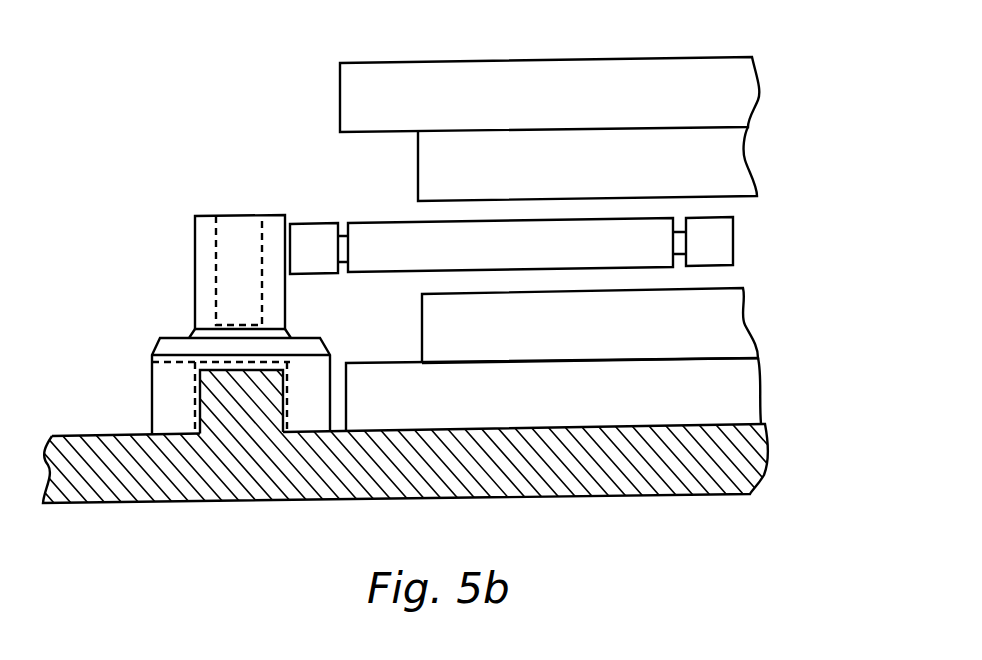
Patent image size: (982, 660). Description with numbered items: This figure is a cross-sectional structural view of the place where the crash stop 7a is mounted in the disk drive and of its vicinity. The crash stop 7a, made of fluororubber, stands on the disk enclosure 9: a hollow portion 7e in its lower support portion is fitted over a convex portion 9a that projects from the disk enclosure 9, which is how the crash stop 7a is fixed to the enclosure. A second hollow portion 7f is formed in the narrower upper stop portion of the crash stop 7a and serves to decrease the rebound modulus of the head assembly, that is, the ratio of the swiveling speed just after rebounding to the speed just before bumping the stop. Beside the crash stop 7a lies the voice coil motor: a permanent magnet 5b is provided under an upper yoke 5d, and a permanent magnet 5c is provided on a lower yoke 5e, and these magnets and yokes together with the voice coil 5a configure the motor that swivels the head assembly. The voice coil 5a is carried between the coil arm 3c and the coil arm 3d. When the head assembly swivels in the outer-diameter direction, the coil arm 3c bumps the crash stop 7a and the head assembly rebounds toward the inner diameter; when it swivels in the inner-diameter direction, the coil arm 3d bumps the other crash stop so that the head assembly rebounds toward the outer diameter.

The upper yoke 5d is at (728, 97).
The permanent magnet 5b is at (728, 165).
The coil arm 3c is at (326, 223).
The voice coil 5a is at (377, 257).
The coil arm 3d is at (733, 237).
The permanent magnet 5c is at (716, 327).
The lower yoke 5e is at (725, 397).
The crash stop 7a is at (176, 235).
The hollow portion 7f is at (234, 238).
The hollow portion 7e is at (150, 364).
The convex portion 9a is at (227, 413).
The disk enclosure 9 is at (137, 476).